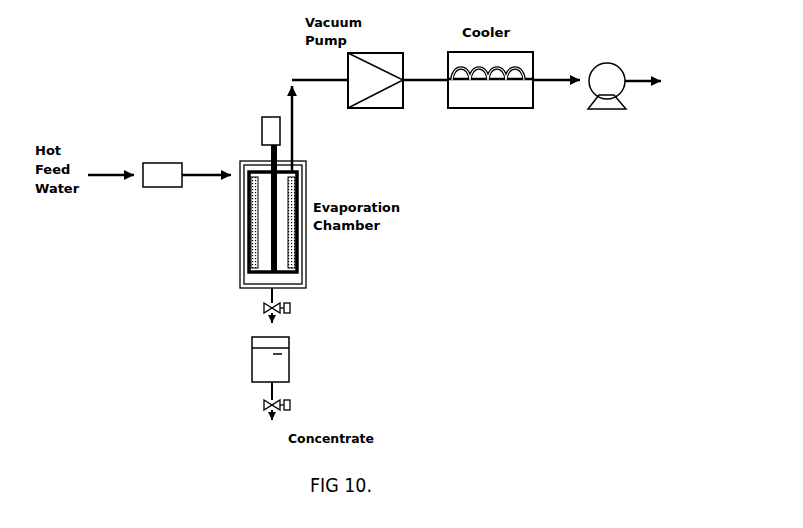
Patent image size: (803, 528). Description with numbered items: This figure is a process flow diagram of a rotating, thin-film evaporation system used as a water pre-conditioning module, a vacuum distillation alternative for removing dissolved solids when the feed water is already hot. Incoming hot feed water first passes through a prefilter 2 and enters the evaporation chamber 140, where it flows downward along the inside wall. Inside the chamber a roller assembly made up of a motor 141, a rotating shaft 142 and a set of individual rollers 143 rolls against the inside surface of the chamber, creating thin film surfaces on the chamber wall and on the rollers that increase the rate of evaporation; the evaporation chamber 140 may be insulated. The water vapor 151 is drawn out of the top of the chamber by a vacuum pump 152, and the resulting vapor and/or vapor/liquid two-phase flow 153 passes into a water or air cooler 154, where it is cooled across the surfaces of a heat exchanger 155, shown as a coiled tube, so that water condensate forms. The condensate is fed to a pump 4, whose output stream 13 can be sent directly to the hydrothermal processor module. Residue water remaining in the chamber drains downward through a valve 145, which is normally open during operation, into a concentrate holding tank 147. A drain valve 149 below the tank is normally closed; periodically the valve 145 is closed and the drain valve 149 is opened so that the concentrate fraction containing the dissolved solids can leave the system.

The prefilter 2 is at (172, 166).
The pump 4 is at (597, 62).
The output stream 13 is at (652, 78).
The evaporation chamber 140 is at (302, 243).
The motor 141 is at (262, 127).
The rotating shaft 142 is at (270, 228).
The rollers 143 is at (255, 247).
The valve 145 is at (265, 320).
The concentrate holding tank 147 is at (287, 365).
The drain valve 149 is at (263, 417).
The water vapor 151 is at (293, 115).
The vacuum pump 152 is at (383, 110).
The vapor and/or vapor/liquid two-phase flow 153 is at (422, 83).
The cooler 154 is at (476, 89).
The heat exchanger 155 is at (465, 70).